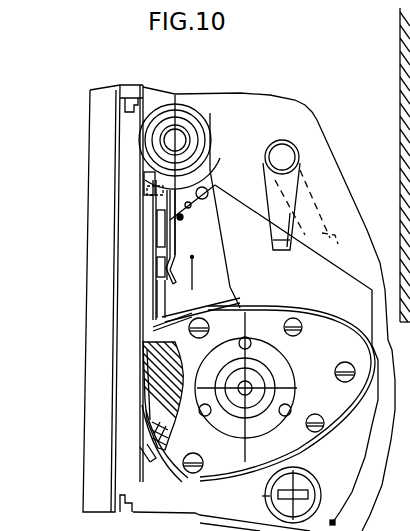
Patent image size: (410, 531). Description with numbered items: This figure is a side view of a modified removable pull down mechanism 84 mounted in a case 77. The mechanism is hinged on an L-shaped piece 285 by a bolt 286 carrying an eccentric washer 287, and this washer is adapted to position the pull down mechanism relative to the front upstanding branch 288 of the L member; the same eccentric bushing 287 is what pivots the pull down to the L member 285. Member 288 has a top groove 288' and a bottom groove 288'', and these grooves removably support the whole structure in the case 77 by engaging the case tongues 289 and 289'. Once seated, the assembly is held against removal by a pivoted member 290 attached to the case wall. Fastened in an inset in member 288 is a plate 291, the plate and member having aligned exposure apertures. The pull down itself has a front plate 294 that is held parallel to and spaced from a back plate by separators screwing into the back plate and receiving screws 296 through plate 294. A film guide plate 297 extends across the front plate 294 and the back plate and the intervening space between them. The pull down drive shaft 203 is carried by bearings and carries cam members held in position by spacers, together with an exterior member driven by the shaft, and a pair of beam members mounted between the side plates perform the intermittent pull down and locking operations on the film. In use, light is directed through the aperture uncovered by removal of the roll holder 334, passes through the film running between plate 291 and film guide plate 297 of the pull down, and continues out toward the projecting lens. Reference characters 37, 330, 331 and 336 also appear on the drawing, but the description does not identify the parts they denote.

The case 77 is at (270, 96).
The pull down mechanism 84 is at (320, 327).
The shaft 37 is at (263, 462).
The pull down drive shaft 203 is at (297, 390).
The L-shaped piece 285 is at (312, 212).
The bolt 286 is at (307, 482).
The eccentric washer 287 is at (213, 497).
The front upstanding branch 288 is at (85, 298).
The top groove 288' is at (81, 120).
The bottom groove 288'' is at (152, 493).
The case tongue 289 is at (152, 89).
The case tongue 289' is at (80, 502).
The pivoted member 290 is at (292, 152).
The plate 291 is at (143, 438).
The front plate 294 is at (143, 386).
The screws 296 is at (287, 317).
The film guide plate 297 is at (143, 397).
The lever 330 is at (197, 170).
The pulley 331 is at (195, 130).
The roll holder 334 is at (196, 294).
The link 336 is at (173, 246).